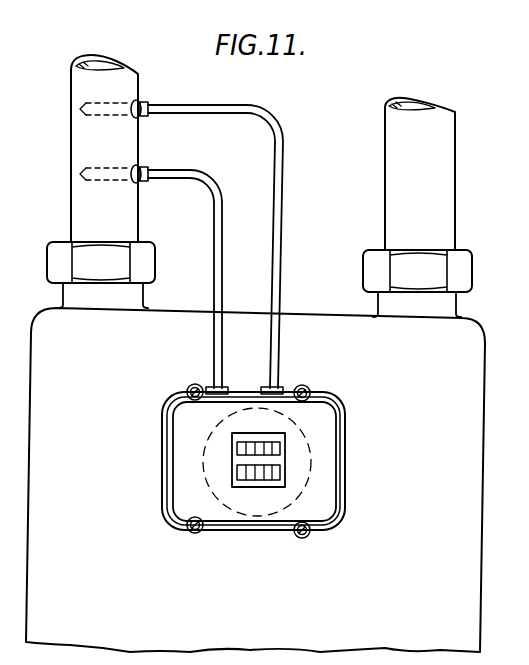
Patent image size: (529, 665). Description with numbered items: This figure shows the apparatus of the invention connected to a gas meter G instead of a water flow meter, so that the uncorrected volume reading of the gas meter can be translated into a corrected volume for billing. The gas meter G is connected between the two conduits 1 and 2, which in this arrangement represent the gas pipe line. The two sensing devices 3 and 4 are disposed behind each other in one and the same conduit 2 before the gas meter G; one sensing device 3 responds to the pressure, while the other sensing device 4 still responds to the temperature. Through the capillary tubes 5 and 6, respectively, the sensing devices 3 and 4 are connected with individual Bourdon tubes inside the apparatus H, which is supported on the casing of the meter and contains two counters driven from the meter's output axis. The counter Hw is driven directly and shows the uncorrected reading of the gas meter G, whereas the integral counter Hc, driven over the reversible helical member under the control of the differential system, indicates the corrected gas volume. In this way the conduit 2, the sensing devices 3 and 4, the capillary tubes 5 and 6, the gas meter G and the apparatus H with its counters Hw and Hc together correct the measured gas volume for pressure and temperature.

The pipe line conduit 1 is at (393, 214).
The return conduit 2 is at (71, 215).
The sensing device 3 is at (79, 109).
The sensing device 4 is at (79, 174).
The capillary tube 5 is at (275, 354).
The capillary tube 6 is at (218, 352).
The apparatus H is at (345, 455).
The counter Hw is at (236, 443).
The integral counter Hc is at (278, 474).
The gas meter G is at (255, 480).